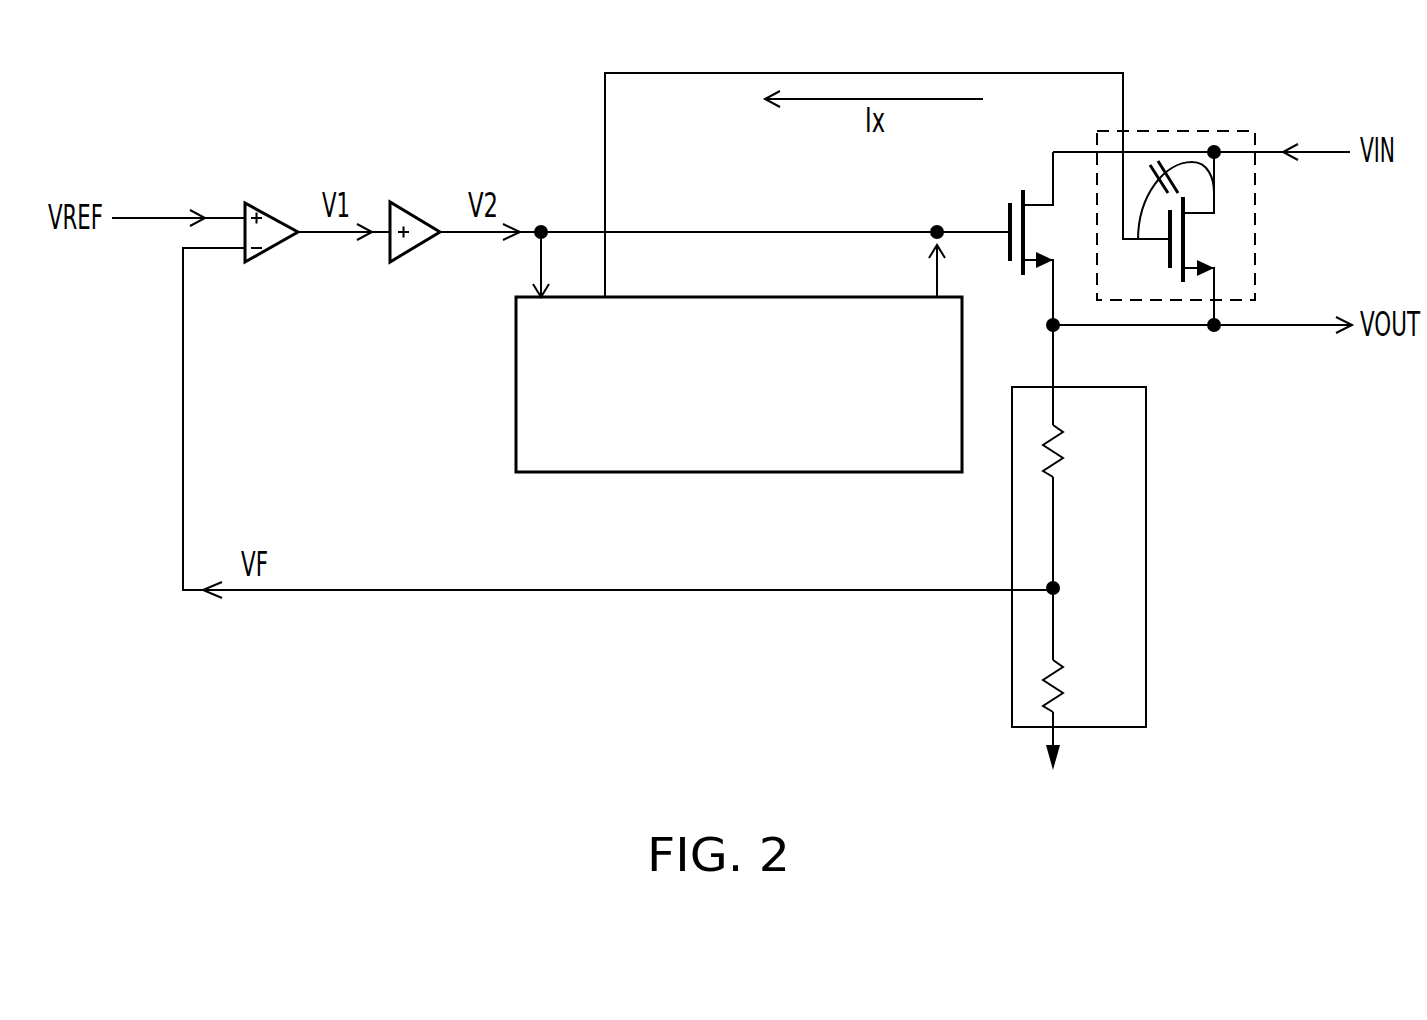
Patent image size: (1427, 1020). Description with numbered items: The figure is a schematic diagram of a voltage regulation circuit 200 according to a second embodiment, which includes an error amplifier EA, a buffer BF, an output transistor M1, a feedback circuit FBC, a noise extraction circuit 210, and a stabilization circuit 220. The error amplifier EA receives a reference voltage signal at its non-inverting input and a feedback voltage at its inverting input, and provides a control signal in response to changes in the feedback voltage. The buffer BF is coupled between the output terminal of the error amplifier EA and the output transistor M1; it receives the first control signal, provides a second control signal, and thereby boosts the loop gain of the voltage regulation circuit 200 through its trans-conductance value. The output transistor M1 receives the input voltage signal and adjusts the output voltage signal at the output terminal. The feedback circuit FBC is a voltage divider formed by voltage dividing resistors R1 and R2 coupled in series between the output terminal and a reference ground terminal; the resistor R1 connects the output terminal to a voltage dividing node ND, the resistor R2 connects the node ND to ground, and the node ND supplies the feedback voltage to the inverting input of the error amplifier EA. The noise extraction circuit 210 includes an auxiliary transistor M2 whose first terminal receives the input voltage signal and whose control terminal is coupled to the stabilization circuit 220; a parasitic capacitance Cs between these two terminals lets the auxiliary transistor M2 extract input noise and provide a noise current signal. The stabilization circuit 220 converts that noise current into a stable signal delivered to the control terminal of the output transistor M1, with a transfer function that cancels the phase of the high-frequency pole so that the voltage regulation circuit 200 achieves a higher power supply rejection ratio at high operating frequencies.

The voltage regulation circuit 200 is at (1242, 816).
The noise extraction circuit 210 is at (1176, 187).
The stabilization circuit 220 is at (516, 437).
The error amplifier EA is at (262, 262).
The buffer BF is at (405, 262).
The output transistor M1 is at (1040, 238).
The auxiliary transistor M2 is at (1202, 238).
The parasitic capacitance Cs is at (1169, 193).
The feedback circuit FBC is at (1130, 547).
The voltage dividing resistor R1 is at (1074, 451).
The voltage dividing resistor R2 is at (1076, 686).
The voltage dividing node ND is at (1060, 585).